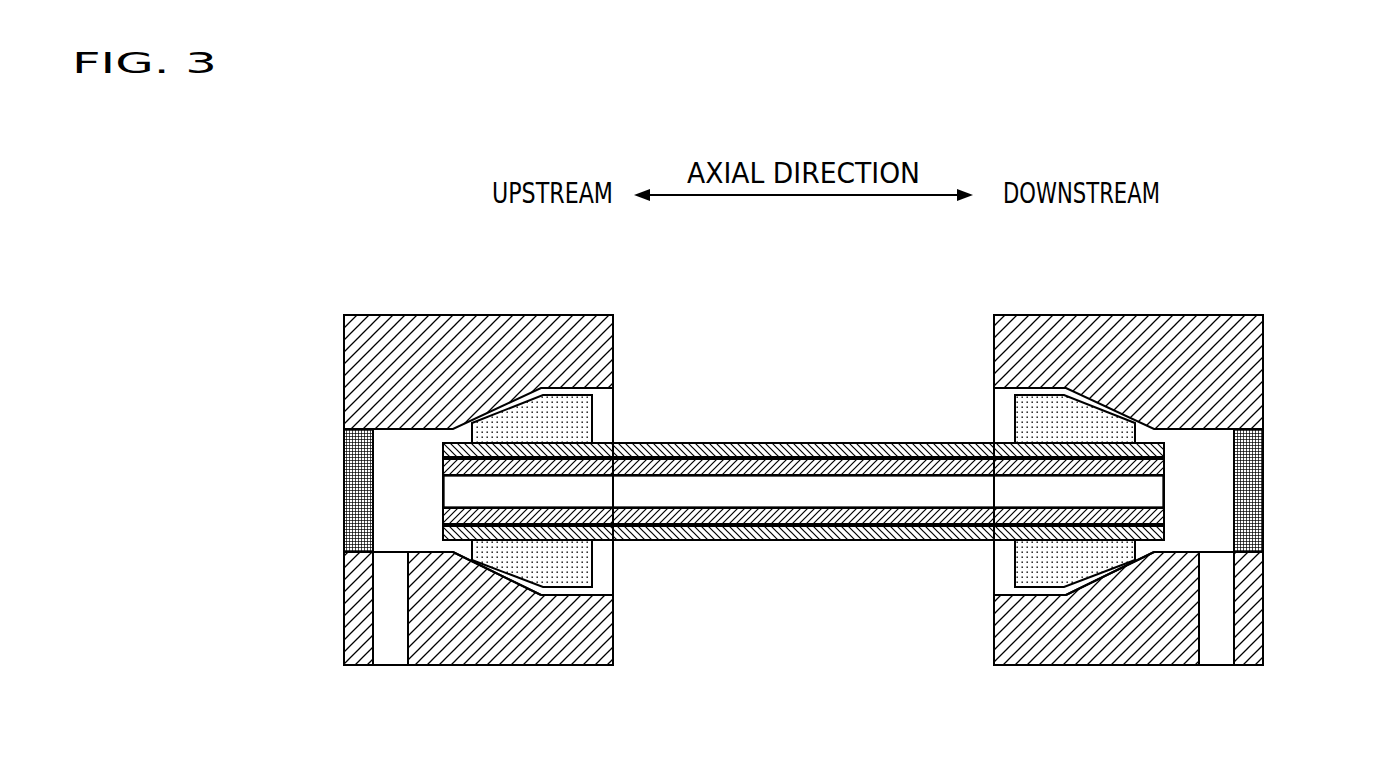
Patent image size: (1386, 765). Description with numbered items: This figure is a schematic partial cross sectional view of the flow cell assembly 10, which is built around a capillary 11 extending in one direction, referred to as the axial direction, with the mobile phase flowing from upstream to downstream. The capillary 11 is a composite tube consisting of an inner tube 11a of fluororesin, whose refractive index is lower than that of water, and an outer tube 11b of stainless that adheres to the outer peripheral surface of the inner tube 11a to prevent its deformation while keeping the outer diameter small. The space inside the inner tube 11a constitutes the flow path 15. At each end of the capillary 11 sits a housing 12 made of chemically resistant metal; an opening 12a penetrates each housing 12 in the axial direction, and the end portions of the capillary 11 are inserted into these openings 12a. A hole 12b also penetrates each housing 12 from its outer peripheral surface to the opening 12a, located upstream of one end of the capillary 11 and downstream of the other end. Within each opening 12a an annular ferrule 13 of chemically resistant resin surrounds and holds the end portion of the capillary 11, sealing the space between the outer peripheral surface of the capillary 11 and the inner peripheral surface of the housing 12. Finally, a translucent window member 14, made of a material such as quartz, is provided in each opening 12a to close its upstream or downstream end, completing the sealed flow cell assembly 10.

The flow cell assembly 10 is at (1324, 186).
The capillary 11 is at (803, 426).
The inner tube 11a is at (882, 377).
The outer tube 11b is at (835, 452).
The housing 12 is at (424, 325).
The opening 12a is at (497, 570).
The hole 12b is at (372, 617).
The ferrule 13 is at (563, 407).
The window member 14 is at (1314, 445).
The flow path 15 is at (803, 493).